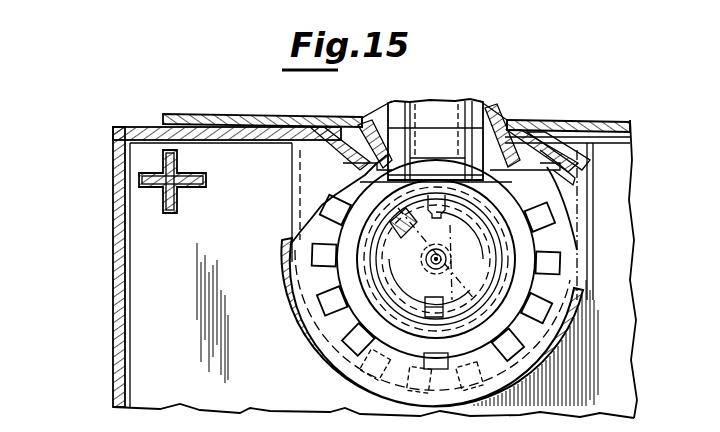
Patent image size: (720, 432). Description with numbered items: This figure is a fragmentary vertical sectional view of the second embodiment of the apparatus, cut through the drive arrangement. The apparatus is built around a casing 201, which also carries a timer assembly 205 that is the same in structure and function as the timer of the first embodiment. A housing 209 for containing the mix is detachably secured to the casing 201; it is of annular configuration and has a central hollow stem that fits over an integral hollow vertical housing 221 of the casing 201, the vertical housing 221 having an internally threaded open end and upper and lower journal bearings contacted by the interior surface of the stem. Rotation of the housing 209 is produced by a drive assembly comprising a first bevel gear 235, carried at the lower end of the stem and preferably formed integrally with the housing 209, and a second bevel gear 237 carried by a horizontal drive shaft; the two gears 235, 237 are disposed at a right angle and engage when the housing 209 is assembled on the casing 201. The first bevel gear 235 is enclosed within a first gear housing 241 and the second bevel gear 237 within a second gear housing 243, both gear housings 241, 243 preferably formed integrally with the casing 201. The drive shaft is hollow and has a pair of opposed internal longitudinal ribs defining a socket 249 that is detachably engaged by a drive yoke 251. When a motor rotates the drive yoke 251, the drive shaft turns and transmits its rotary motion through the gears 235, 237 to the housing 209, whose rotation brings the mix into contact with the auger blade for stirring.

The casing 201 is at (114, 216).
The timer assembly 205 is at (190, 188).
The housing 209 is at (222, 114).
The hollow vertical housing 221 is at (466, 100).
The first bevel gear 235 is at (522, 138).
The second bevel gear 237 is at (547, 218).
The first gear housing 241 is at (548, 157).
The second gear housing 243 is at (488, 385).
The socket 249 is at (490, 248).
The drive yoke 251 is at (406, 236).